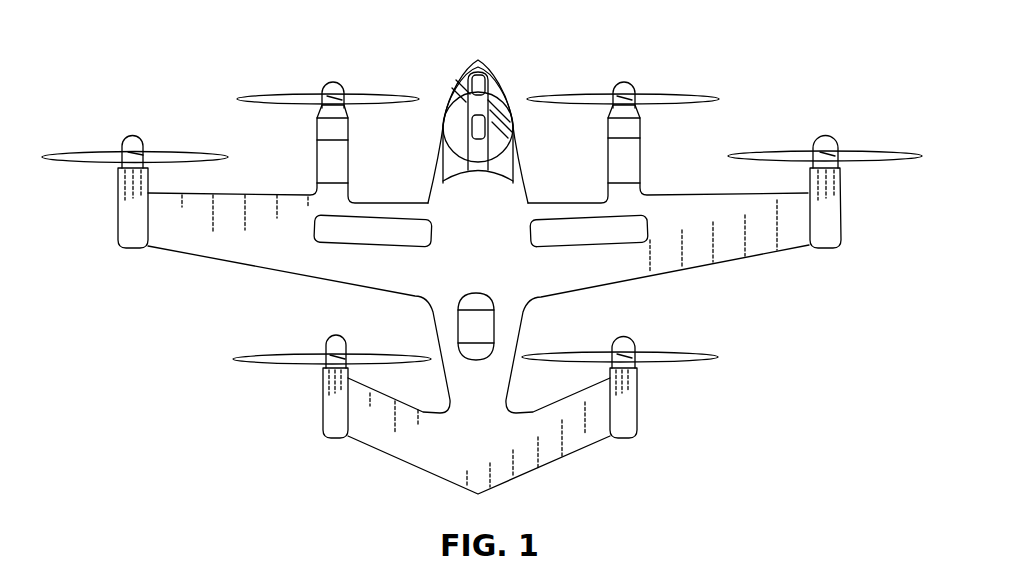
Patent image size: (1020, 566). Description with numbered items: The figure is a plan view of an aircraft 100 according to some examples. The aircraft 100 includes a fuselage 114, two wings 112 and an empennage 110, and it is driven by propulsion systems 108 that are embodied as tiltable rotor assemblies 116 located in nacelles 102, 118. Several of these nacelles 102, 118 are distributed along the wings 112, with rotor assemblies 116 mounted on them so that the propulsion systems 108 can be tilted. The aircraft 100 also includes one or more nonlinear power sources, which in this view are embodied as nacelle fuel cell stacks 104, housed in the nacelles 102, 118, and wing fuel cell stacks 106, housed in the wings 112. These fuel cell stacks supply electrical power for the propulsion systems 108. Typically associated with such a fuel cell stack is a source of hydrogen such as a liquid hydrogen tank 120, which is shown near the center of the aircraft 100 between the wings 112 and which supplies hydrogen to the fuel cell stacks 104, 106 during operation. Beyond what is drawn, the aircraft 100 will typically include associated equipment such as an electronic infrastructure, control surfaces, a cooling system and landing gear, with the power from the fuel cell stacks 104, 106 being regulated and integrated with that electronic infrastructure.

The aircraft 100 is at (477, 265).
The nacelle 102 is at (350, 135).
The nacelle fuel cell stack 104 is at (330, 168).
The wing fuel cell stack 106 is at (317, 238).
The propulsion system 108 is at (627, 100).
The empennage 110 is at (380, 433).
The wing 112 is at (210, 257).
The fuselage 114 is at (432, 313).
The tiltable rotor assembly 116 is at (133, 140).
The nacelle 118 is at (130, 198).
The liquid hydrogen tank 120 is at (498, 316).